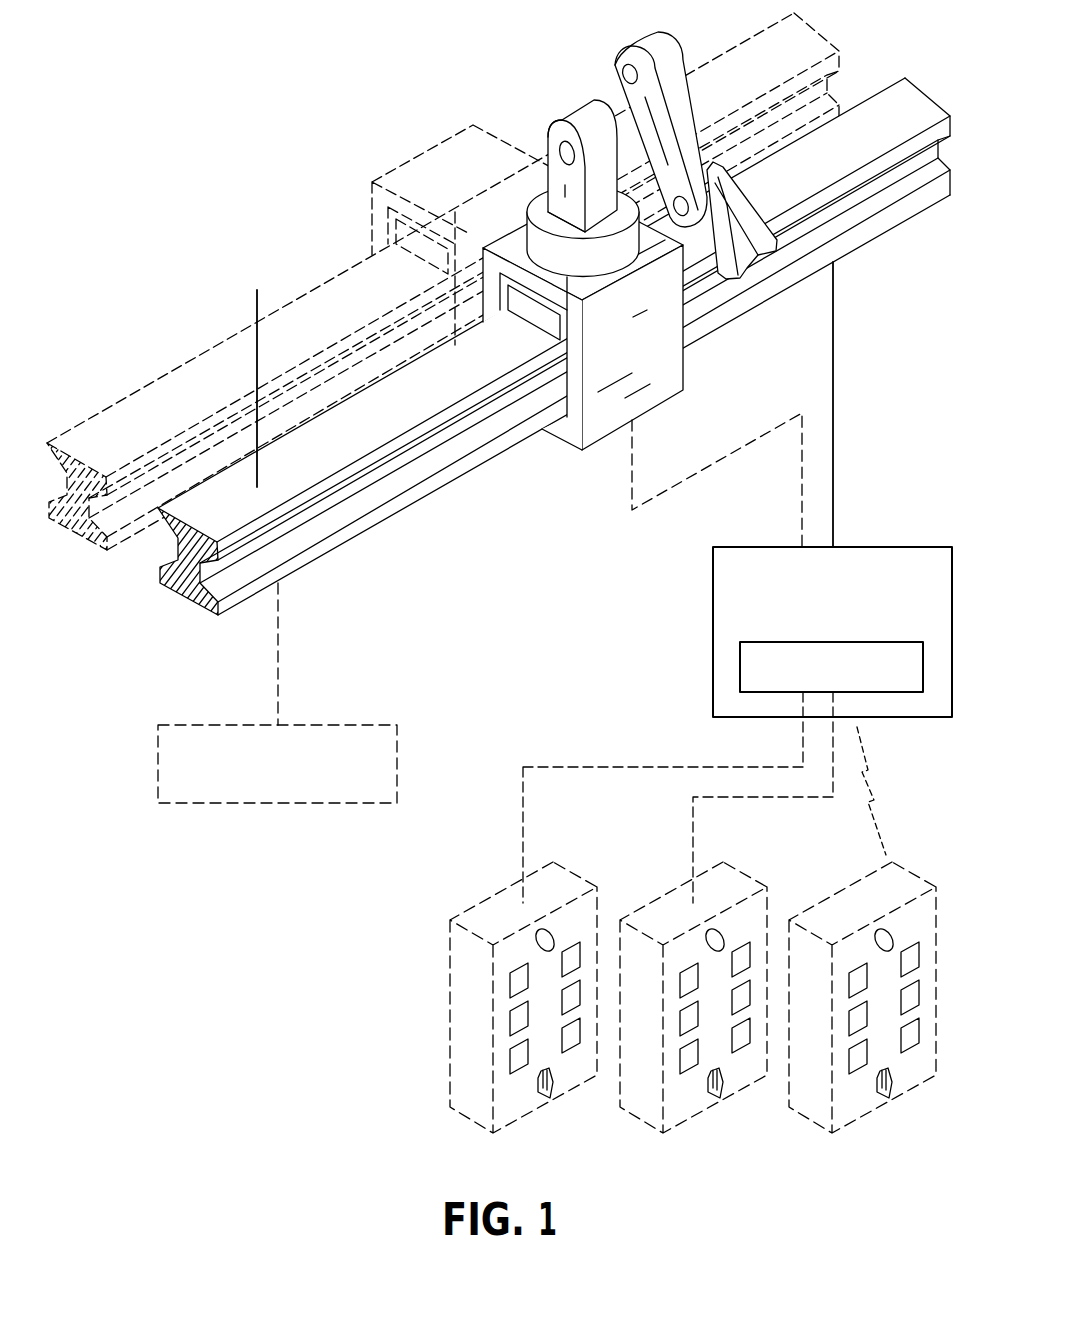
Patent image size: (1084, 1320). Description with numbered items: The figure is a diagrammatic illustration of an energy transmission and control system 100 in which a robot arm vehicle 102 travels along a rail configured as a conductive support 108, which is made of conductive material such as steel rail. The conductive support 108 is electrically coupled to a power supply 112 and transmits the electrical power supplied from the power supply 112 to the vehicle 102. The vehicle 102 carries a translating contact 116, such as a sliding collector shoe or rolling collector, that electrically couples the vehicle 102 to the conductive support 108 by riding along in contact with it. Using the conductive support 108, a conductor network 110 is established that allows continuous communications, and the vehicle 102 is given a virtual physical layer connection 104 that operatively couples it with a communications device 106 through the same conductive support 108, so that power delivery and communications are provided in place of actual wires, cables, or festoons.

The energy transmission and control system 100 is at (318, 47).
The vehicle 102 is at (553, 292).
The virtual physical layer connection 104 is at (788, 417).
The communications device 106 is at (895, 545).
The conductive support 108 is at (97, 413).
The conductor network 110 is at (210, 477).
The power supply 112 is at (258, 217).
The translating contact 116 is at (503, 300).